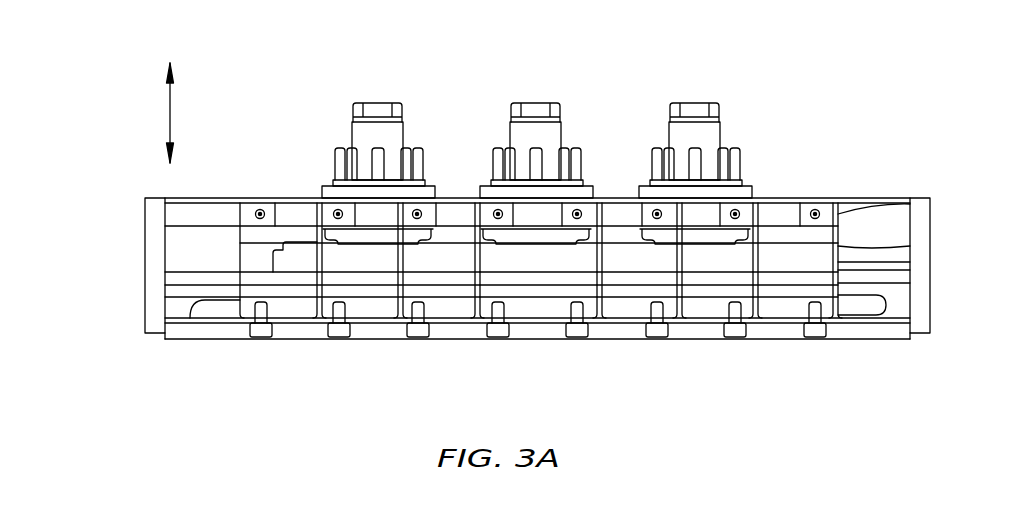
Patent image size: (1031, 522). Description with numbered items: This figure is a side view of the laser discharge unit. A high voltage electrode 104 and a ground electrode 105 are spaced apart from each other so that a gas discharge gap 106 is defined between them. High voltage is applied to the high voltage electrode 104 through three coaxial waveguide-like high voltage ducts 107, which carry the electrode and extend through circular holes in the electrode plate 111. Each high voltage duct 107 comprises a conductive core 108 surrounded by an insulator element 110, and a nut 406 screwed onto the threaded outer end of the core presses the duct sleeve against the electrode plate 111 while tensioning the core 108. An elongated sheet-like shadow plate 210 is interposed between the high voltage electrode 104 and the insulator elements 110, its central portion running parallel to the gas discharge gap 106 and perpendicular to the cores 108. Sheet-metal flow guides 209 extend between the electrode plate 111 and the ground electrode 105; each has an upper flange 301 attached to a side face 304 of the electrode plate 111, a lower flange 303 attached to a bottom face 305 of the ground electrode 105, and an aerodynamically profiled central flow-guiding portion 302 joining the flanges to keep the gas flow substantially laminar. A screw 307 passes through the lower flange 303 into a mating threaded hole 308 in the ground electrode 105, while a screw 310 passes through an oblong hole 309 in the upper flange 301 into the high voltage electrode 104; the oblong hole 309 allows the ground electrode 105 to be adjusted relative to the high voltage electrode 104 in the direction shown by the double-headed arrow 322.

The high voltage electrode 104 is at (783, 255).
The ground electrode 105 is at (870, 305).
The gas discharge gap 106 is at (525, 277).
The high voltage duct 107 is at (517, 118).
The conductive core 108 is at (693, 247).
The insulator element 110 is at (648, 235).
The electrode plate 111 is at (905, 195).
The flow guide 209 is at (473, 257).
The shadow plate 210 is at (347, 245).
The upper flange 301 is at (827, 208).
The central flow-guiding portion 302 is at (838, 214).
The lower flange 303 is at (338, 339).
The side face 304 is at (887, 215).
The bottom face 305 is at (712, 318).
The screw 307 is at (262, 340).
The threaded hole 308 is at (645, 310).
The oblong hole 309 is at (264, 208).
The screw 310 is at (258, 210).
The double-headed arrow 322 is at (170, 112).
The nut 406 is at (700, 103).